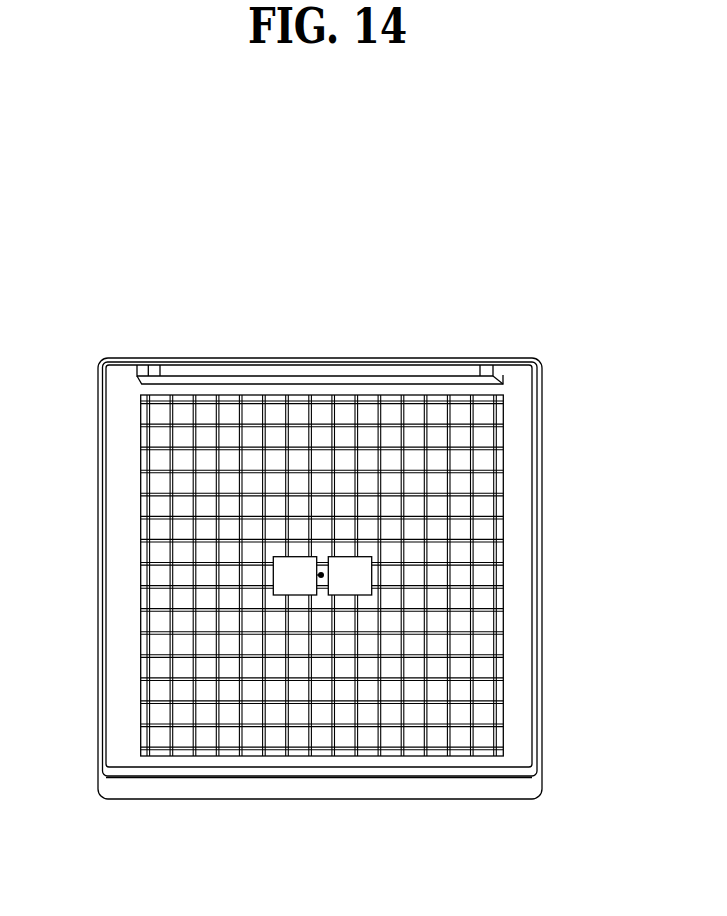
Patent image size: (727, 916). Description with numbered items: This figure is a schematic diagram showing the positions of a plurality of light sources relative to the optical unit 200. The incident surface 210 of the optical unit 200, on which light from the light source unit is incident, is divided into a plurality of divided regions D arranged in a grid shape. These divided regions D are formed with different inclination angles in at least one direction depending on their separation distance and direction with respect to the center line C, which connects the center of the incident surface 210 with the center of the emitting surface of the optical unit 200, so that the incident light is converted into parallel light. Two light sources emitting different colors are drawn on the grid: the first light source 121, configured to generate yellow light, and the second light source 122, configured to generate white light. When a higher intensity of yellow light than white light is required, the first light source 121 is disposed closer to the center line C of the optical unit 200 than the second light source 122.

The optical unit 200 is at (332, 532).
The incident surface 210 is at (518, 457).
The divided regions D is at (320, 438).
The center line C is at (321, 575).
The first light source 121 is at (287, 588).
The second light source 122 is at (357, 590).